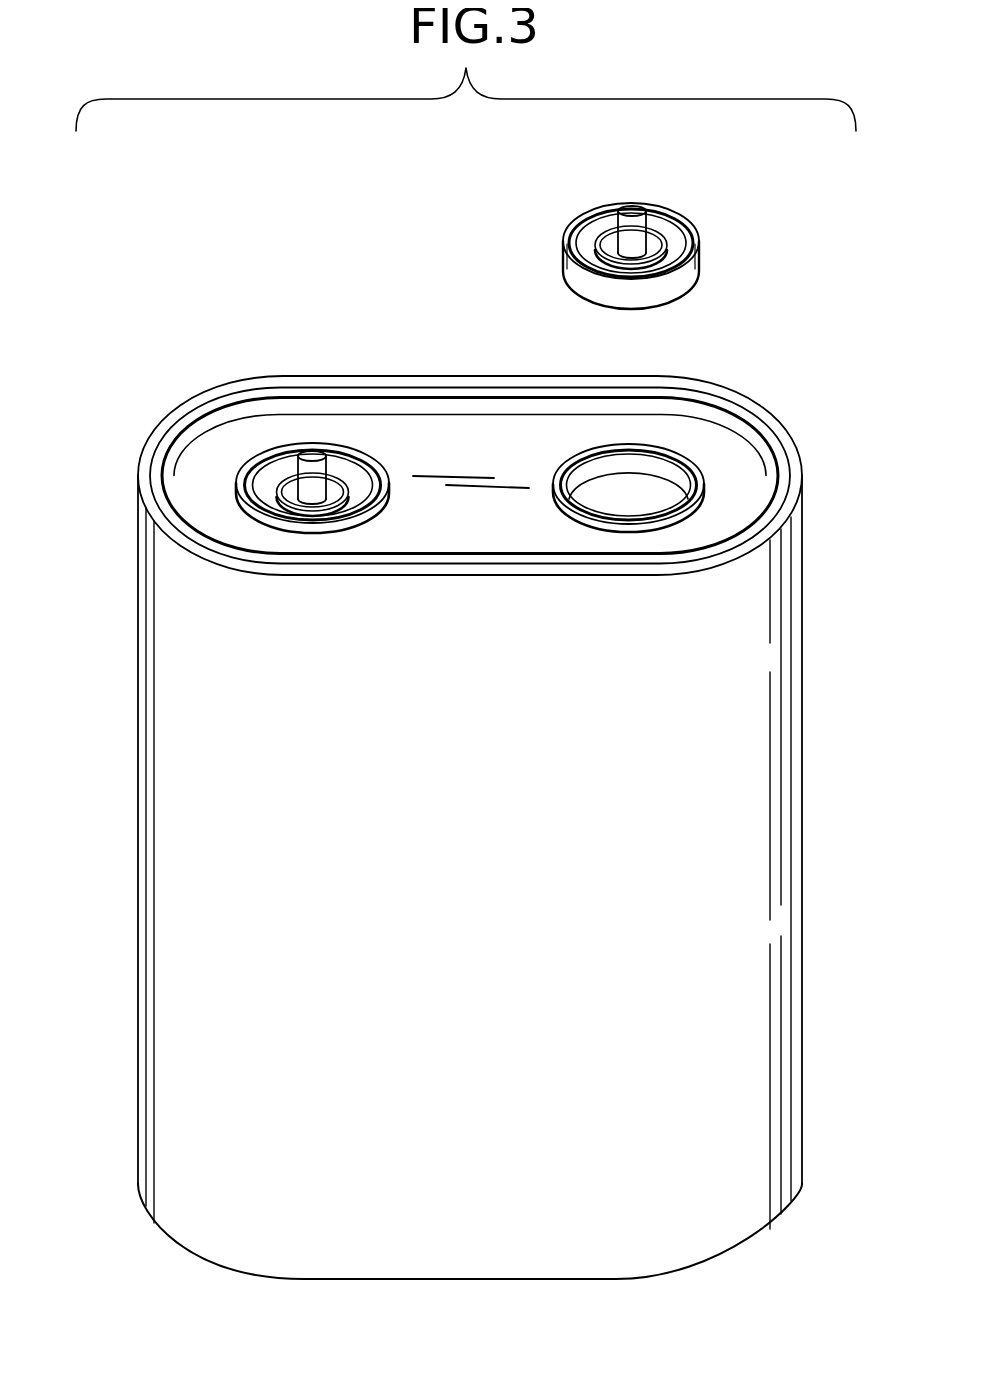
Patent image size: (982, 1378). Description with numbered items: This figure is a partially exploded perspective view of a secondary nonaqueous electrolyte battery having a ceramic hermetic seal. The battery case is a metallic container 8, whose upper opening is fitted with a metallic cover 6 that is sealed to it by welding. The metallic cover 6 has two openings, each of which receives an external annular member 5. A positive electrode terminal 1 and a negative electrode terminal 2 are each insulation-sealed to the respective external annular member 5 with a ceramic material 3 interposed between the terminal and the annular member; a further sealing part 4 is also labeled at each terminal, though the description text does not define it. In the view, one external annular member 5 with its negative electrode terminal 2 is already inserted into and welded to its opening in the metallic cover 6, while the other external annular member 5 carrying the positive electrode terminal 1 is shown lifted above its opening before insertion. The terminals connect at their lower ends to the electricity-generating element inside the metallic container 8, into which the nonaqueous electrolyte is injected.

The positive electrode terminal 1 is at (630, 208).
The negative electrode terminal 2 is at (313, 455).
The ceramic material 3 is at (288, 488).
The insulating ring 4 is at (345, 487).
The external annular member 5 is at (270, 500).
The metallic cover 6 is at (473, 432).
The metallic container 8 is at (789, 848).